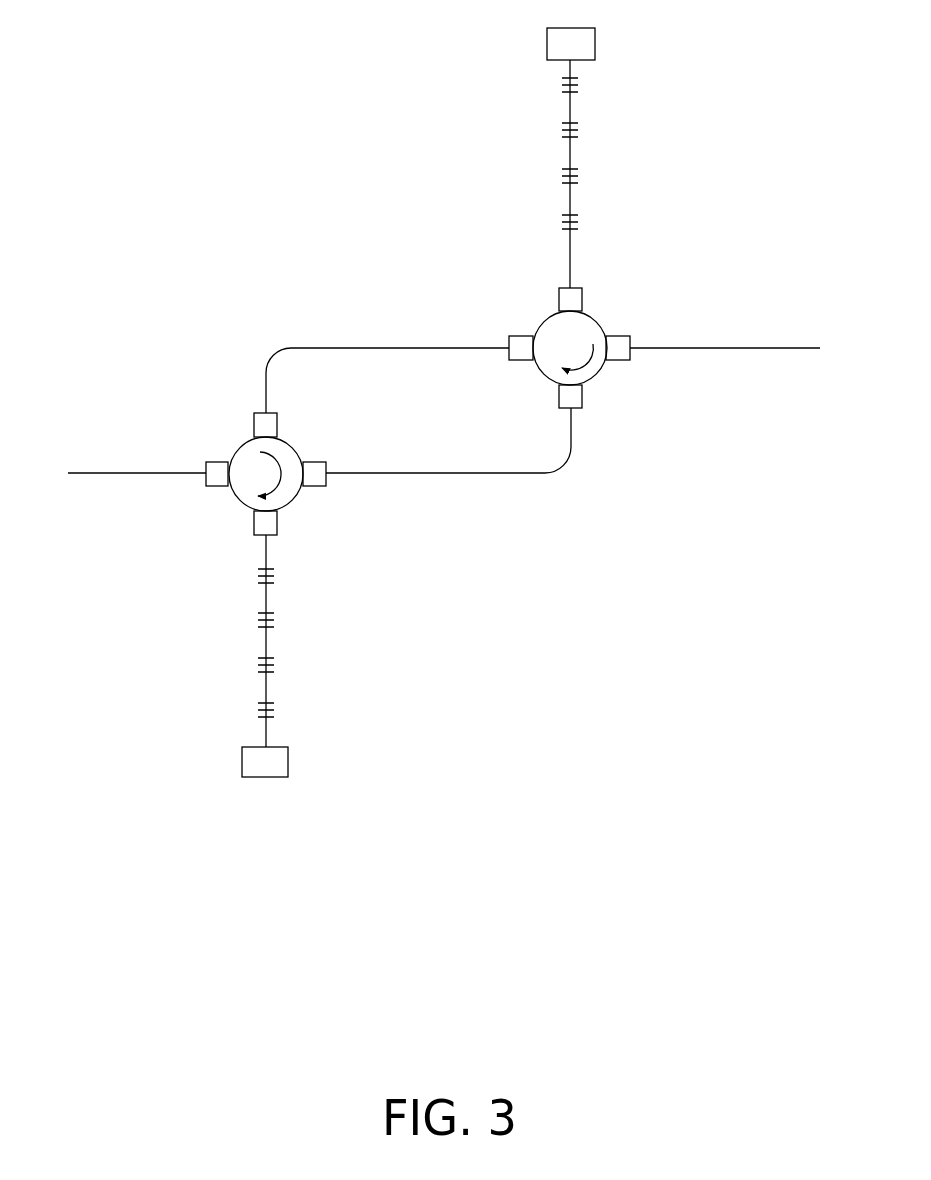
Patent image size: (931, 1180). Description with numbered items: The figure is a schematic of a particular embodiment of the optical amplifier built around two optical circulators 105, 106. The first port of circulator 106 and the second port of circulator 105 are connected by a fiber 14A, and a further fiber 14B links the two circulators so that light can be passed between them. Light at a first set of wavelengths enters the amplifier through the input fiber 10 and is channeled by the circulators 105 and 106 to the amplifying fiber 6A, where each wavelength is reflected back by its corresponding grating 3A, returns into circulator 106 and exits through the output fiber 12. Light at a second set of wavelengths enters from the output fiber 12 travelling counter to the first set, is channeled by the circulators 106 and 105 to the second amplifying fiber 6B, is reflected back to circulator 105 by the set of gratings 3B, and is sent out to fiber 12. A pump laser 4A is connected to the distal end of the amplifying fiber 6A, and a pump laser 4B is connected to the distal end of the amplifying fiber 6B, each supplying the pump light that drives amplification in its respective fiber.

The input fiber 10 is at (90, 474).
The output fiber 12 is at (793, 348).
The fiber 14A is at (362, 347).
The fiber 14B is at (448, 488).
The circulator 105 is at (292, 445).
The circulator 106 is at (597, 318).
The pump laser 4A is at (595, 38).
The pump laser 4B is at (288, 763).
The grating 3A is at (585, 128).
The gratings 3B is at (278, 710).
The amplifying fiber 6A is at (570, 195).
The amplifying fiber 6B is at (263, 684).